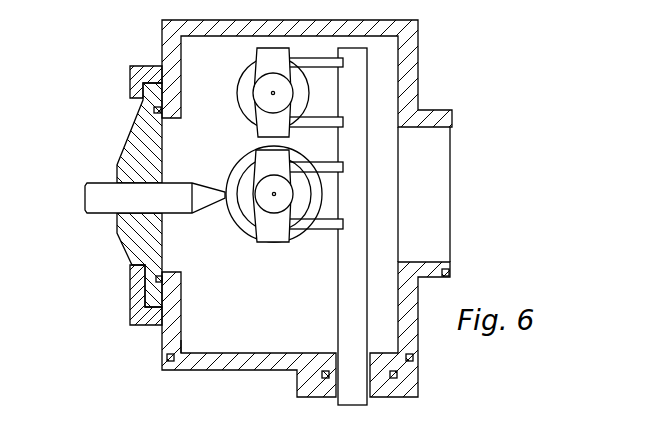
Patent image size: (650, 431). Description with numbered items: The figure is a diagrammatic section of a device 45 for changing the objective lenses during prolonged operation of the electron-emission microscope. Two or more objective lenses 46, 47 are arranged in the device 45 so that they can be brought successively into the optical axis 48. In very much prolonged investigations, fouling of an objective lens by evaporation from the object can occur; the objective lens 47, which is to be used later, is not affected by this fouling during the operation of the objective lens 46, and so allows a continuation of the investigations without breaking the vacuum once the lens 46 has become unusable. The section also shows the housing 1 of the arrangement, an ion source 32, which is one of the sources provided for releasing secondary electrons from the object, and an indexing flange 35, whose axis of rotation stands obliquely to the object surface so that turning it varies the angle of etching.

The housing 1 is at (234, 357).
The ion source 32 is at (97, 204).
The indexing flange 35 is at (125, 163).
The device for changing objective lenses 45 is at (193, 337).
The objective lens 46 is at (265, 188).
The objective lens 47 is at (258, 84).
The optical axis 48 is at (274, 197).